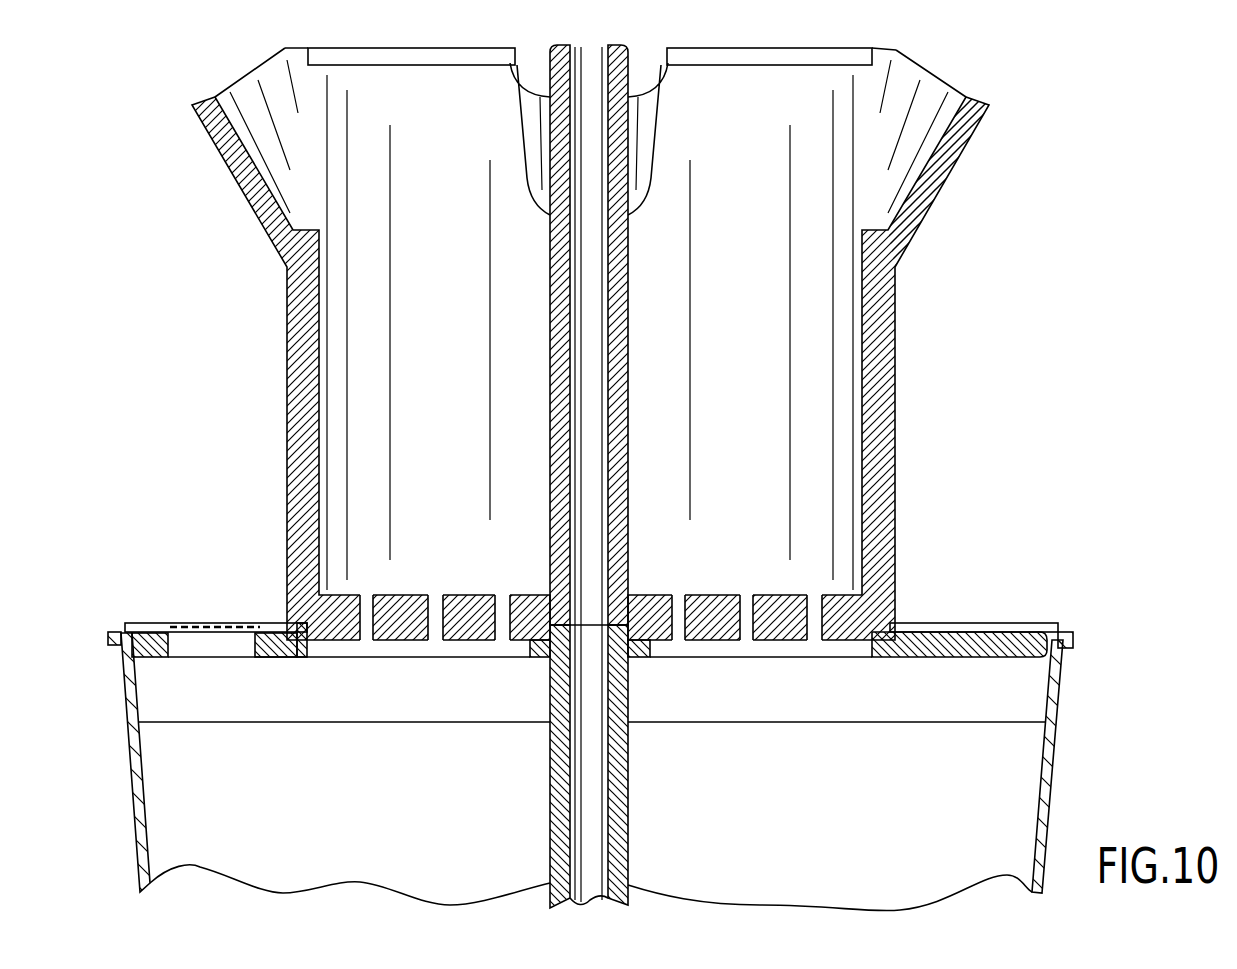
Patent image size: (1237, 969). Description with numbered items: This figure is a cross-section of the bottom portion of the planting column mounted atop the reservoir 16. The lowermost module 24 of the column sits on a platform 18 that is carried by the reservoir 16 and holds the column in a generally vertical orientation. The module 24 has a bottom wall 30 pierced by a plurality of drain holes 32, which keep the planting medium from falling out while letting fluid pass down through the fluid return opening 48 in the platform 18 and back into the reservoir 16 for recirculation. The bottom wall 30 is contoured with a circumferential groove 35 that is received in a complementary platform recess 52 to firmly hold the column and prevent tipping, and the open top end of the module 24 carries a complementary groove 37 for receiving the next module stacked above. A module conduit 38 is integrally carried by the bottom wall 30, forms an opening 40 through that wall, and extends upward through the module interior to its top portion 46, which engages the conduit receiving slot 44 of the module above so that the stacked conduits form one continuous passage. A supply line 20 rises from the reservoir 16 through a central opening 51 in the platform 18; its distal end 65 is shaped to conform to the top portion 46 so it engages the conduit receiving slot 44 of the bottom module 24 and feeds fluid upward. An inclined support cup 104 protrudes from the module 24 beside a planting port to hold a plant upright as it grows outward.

The reservoir 16 is at (1052, 780).
The platform 18 is at (143, 628).
The supply line 20 is at (634, 847).
The module 24 is at (895, 348).
The bottom wall 30 is at (777, 642).
The drain holes 32 is at (813, 603).
The circumferential groove 35 is at (300, 641).
The complementary groove 37 is at (858, 52).
The module conduit 38 is at (630, 383).
The opening 40 is at (631, 683).
The conduit receiving slot 44 is at (578, 657).
The top portion 46 is at (633, 50).
The fluid return opening 48 is at (408, 647).
The central opening 51 is at (601, 640).
The platform recess 52 is at (316, 656).
The distal end 65 is at (549, 624).
The inclined support cup 104 is at (930, 207).